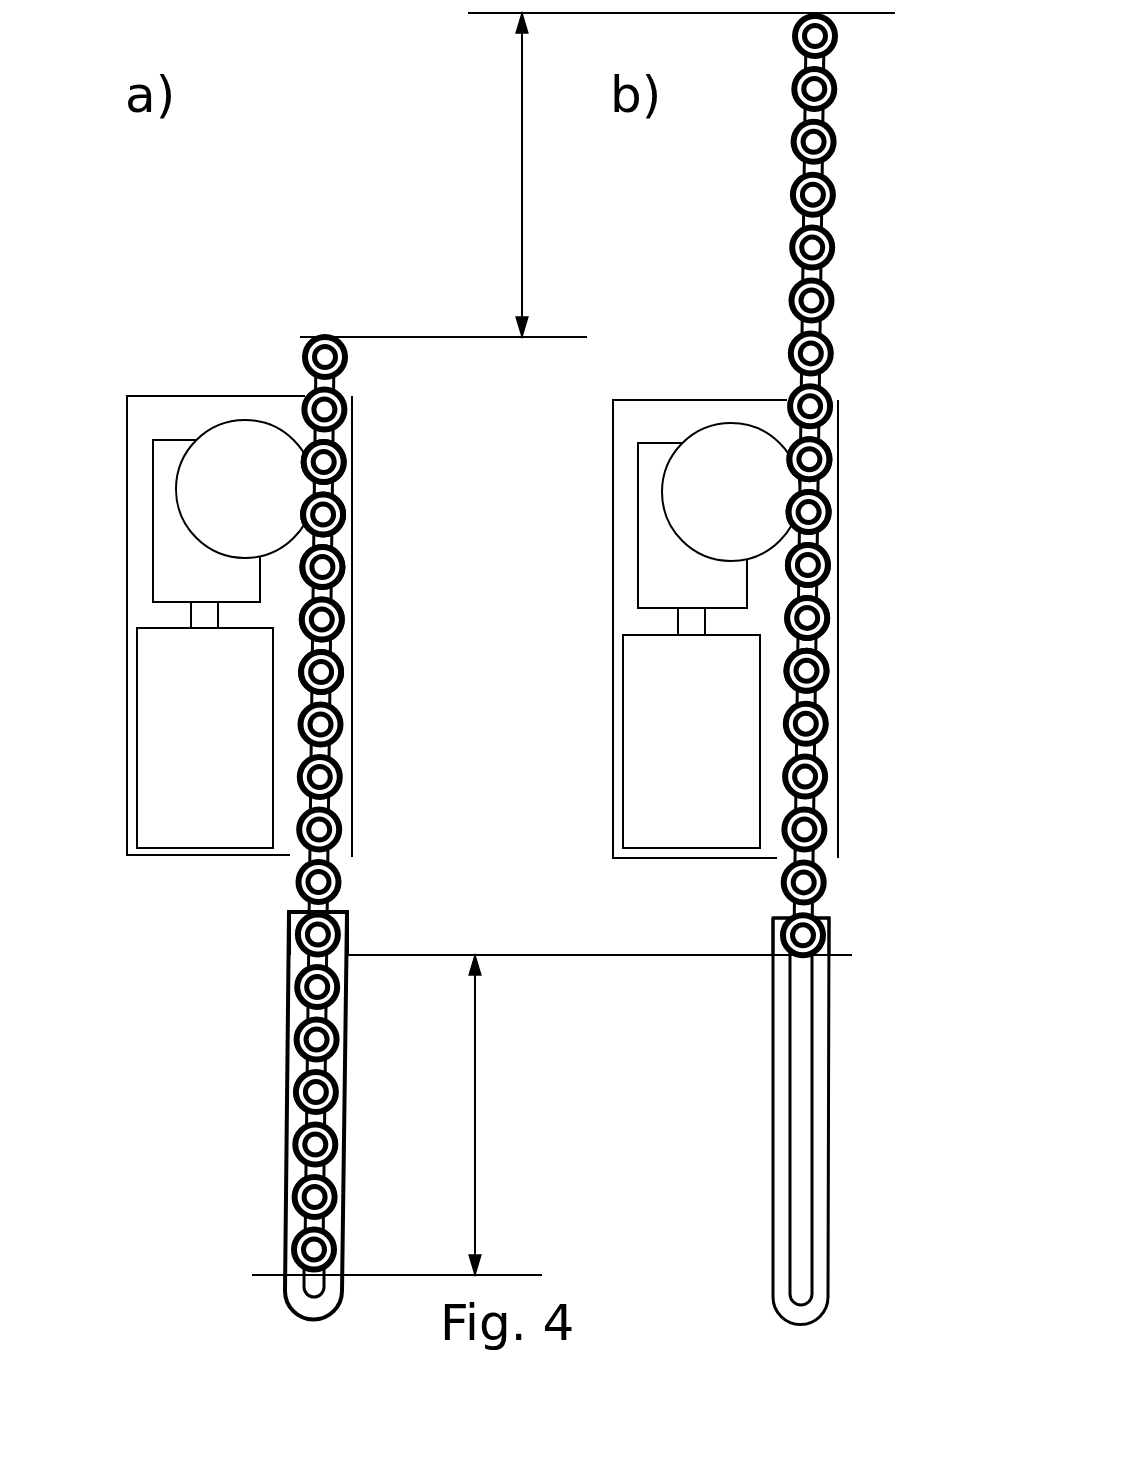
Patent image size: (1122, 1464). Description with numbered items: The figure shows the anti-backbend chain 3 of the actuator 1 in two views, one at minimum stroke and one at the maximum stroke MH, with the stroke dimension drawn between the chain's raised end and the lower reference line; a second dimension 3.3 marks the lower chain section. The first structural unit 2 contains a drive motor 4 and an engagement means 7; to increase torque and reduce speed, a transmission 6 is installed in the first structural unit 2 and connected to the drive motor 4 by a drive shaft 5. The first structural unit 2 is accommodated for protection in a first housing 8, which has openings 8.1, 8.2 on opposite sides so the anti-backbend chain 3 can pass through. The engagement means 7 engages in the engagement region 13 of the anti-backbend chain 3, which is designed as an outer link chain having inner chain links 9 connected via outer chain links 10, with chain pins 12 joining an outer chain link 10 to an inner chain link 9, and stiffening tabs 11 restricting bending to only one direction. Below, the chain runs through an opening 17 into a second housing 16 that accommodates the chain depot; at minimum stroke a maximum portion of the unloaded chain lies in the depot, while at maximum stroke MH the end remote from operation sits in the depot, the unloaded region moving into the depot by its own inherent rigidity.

The actuator 1 is at (484, 183).
The first structural unit 2 is at (117, 447).
The anti-backbend chain 3 is at (300, 347).
The chain end section 3.3 is at (552, 1115).
The drive motor 4 is at (448, 738).
The drive shaft 5 is at (205, 617).
The transmission 6 is at (450, 524).
The engagement means 7 is at (488, 490).
The first housing 8 is at (117, 815).
The opening 8.1 is at (350, 400).
The opening 8.2 is at (340, 858).
The inner chain link 9 is at (325, 543).
The outer chain link 10 is at (320, 597).
The stiffening tab 11 is at (335, 622).
The chain pin 12 is at (335, 675).
The engagement region 13 is at (333, 487).
The second housing 16 is at (288, 1068).
The opening 17 is at (288, 922).
The maximum stroke MH is at (597, 175).